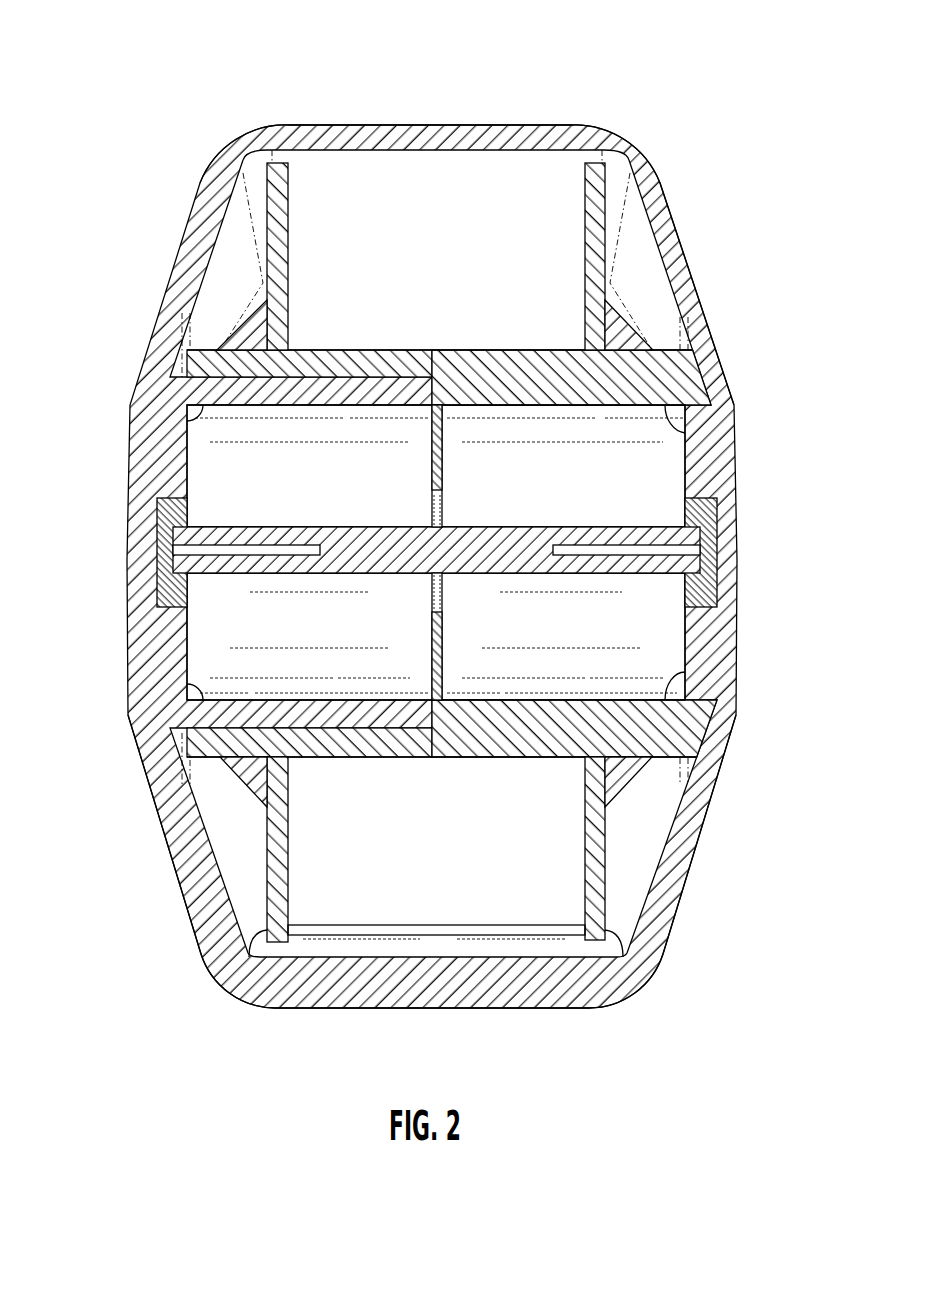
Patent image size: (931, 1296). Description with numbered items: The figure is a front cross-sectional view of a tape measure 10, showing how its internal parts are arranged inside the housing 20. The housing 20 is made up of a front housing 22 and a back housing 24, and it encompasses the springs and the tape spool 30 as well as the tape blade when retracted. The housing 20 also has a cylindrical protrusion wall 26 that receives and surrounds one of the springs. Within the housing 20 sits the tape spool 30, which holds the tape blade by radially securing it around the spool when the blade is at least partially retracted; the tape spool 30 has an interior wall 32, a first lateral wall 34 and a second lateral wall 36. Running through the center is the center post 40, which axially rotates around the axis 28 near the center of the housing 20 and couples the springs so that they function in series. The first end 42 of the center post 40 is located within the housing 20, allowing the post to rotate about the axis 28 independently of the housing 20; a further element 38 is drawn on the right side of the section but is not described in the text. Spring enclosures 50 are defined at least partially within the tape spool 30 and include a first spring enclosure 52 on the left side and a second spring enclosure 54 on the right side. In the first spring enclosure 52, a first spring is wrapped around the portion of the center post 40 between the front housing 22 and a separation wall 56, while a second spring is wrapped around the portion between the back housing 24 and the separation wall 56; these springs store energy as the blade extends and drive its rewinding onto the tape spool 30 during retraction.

The tape measure 10 is at (222, 82).
The housing 20 is at (675, 918).
The front housing 22 is at (433, 254).
The back housing 24 is at (440, 861).
The cylindrical protrusion wall 26 is at (187, 683).
The axis 28 is at (785, 550).
The tape spool 30 is at (683, 730).
The interior wall 32 is at (452, 757).
The first lateral wall 34 is at (290, 907).
The second lateral wall 36 is at (585, 908).
The bearing block 38 is at (687, 673).
The center post 40 is at (312, 527).
The first end 42 is at (157, 588).
The spring enclosures 50 is at (435, 555).
The first spring enclosure 52 is at (260, 608).
The second spring enclosure 54 is at (657, 623).
The separation wall 56 is at (432, 637).